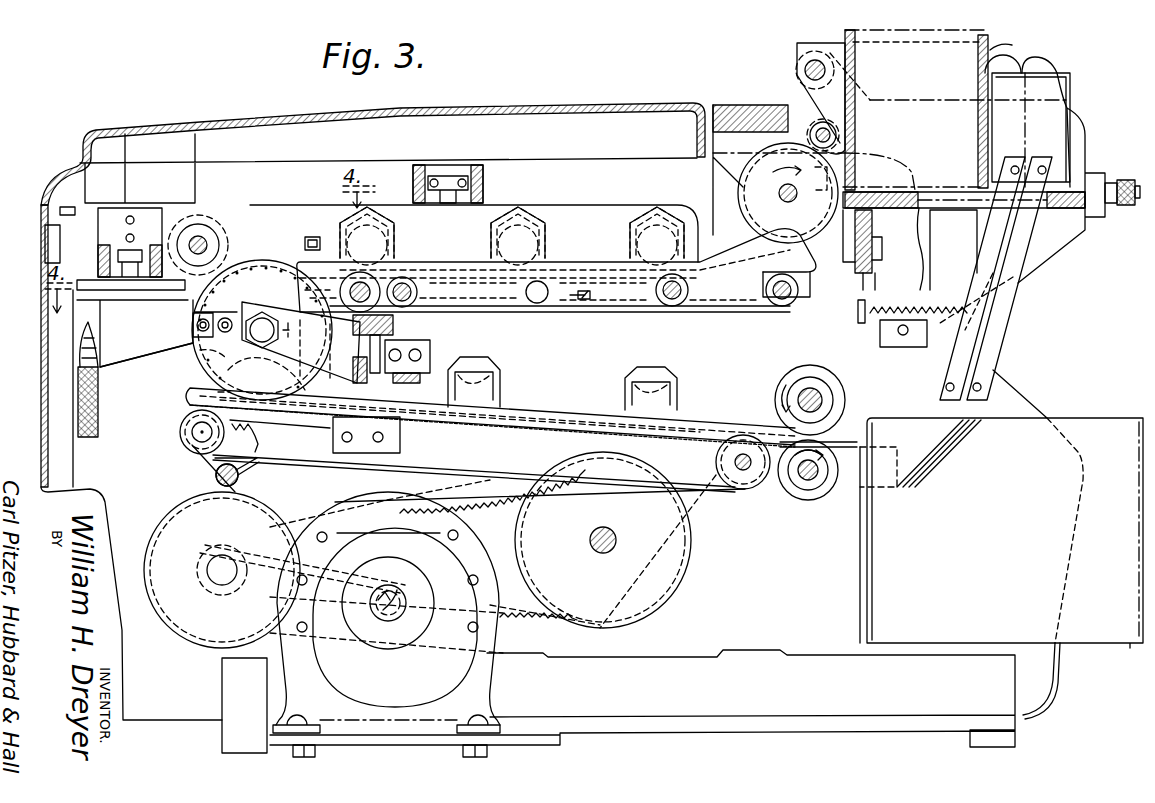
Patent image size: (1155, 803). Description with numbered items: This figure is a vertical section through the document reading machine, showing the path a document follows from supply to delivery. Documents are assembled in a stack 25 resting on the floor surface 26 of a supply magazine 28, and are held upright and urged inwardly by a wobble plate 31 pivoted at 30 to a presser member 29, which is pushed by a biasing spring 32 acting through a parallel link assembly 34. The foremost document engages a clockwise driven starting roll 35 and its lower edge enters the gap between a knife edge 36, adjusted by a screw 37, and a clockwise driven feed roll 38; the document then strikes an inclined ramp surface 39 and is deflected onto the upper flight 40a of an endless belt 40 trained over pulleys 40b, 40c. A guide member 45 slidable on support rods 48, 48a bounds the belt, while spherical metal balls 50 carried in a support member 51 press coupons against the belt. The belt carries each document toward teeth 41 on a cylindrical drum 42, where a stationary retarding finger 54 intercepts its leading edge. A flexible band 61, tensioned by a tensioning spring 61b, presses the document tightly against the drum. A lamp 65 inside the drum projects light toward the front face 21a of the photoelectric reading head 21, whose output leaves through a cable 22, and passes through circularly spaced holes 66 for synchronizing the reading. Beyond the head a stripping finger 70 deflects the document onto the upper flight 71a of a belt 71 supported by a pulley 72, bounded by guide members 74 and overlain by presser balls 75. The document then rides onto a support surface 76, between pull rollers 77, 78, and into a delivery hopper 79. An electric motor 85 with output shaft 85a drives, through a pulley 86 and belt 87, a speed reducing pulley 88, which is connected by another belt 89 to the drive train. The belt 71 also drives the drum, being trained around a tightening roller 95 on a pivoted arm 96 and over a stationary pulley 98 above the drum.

The photoelectric reading head 21 is at (148, 323).
The front face 21a is at (192, 338).
The cable 22 is at (98, 433).
The stack 25 is at (890, 30).
The floor surface 26 is at (947, 188).
The supply magazine 28 is at (1024, 49).
The presser member 29 is at (1047, 85).
The pivot 30 is at (1020, 68).
The wobble plate 31 is at (1010, 52).
The biasing spring 32 is at (935, 310).
The parallel link assembly 34 is at (1032, 289).
The starting roll 35 is at (810, 117).
The knife edge 36 is at (837, 197).
The screw 37 is at (1127, 207).
The feed roll 38 is at (738, 193).
The inclined ramp surface 39 is at (846, 283).
The endless belt 40 is at (737, 322).
The upper flight 40a is at (597, 291).
The pulley 40b is at (301, 342).
The pulley 40c is at (786, 308).
The teeth 41 is at (310, 300).
The cylindrical drum 42 is at (272, 300).
The guide member 45 is at (565, 300).
The support rod 48 is at (415, 290).
The support rod 48a is at (672, 306).
The spherical metal balls 50 is at (492, 240).
The support member 51 is at (560, 212).
The retarding finger 54 is at (313, 237).
The flexible band 61 is at (303, 248).
The tensioning spring 61b is at (258, 444).
The lamp 65 is at (198, 366).
The holes 66 is at (248, 282).
The stripping finger 70 is at (245, 372).
The belt 71 is at (352, 468).
The upper flight 71a is at (280, 426).
The pulley 72 is at (740, 482).
The guide members 74 is at (545, 400).
The presser balls 75 is at (500, 378).
The support surface 76 is at (790, 422).
The pull roller 77 is at (835, 400).
The pull roller 78 is at (805, 492).
The delivery hopper 79 is at (1005, 542).
The electric motor 85 is at (460, 495).
The output shaft 85a is at (393, 615).
The pulley 86 is at (398, 590).
The belt 87 is at (275, 640).
The speed reducing pulley 88 is at (195, 630).
The belt 89 is at (515, 615).
The tightening roller 95 is at (190, 442).
The pivoted arm 96 is at (215, 472).
The stationary pulley 98 is at (203, 224).